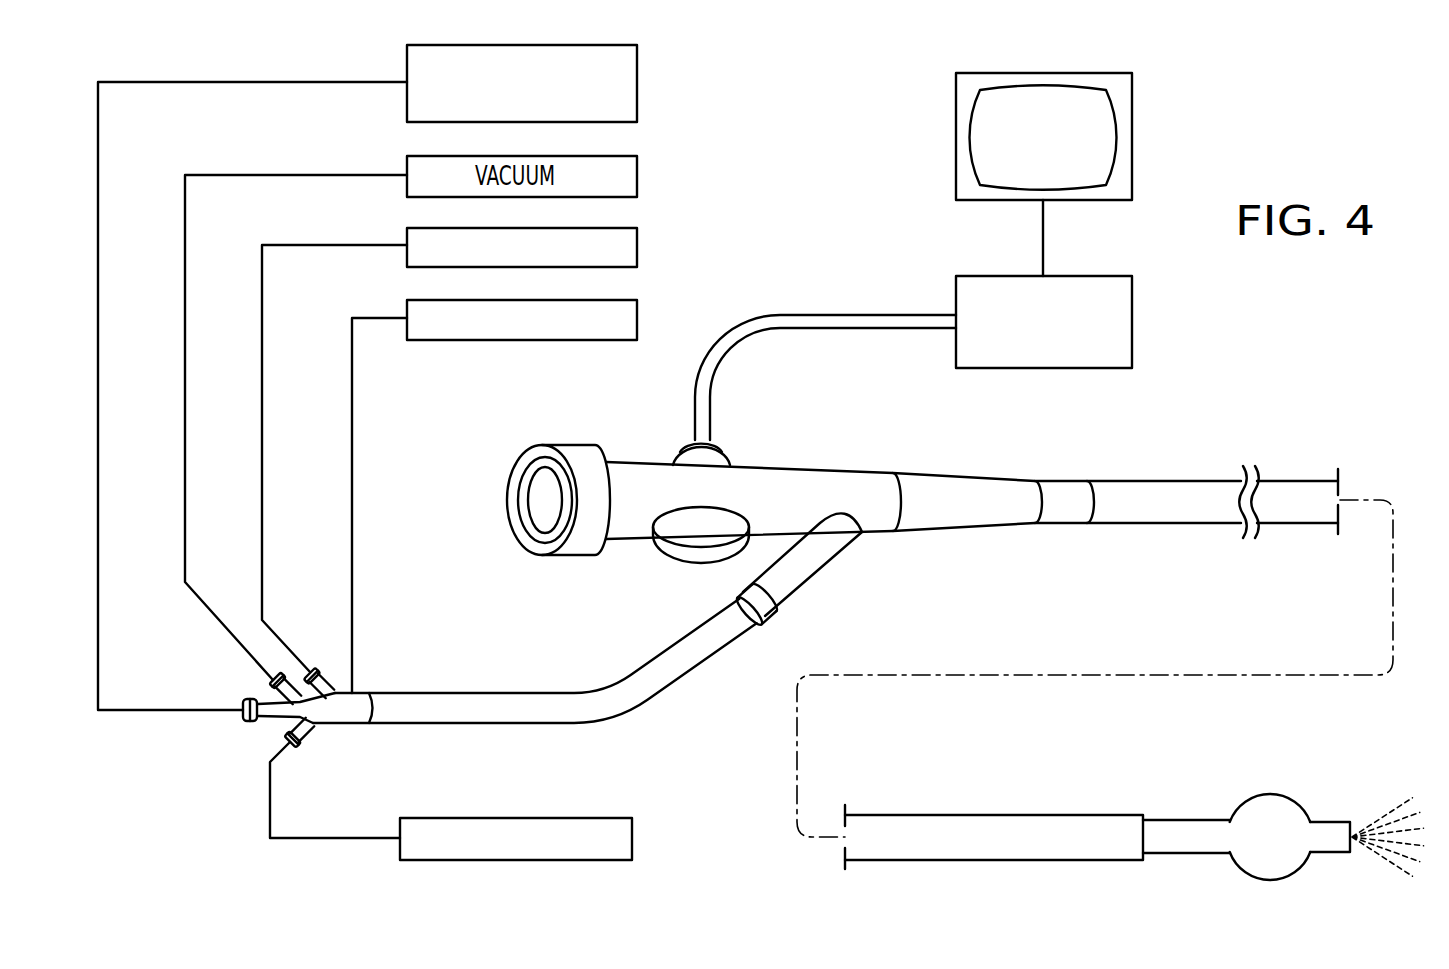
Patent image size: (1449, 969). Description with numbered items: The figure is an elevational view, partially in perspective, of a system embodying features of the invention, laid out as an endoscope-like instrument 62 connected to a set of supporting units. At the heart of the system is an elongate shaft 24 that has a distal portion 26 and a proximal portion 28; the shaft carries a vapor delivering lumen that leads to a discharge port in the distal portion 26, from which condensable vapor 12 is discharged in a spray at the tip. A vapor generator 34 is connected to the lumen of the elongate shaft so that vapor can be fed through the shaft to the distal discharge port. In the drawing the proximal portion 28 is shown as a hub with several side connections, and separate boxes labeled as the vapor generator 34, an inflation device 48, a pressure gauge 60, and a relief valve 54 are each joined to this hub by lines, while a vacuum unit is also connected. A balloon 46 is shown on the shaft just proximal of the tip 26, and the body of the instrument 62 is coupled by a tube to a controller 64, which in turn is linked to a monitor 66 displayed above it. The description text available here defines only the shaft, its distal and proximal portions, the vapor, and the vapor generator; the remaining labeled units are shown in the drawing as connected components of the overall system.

The condensable vapor 12 is at (1385, 815).
The elongate shaft 24 is at (1172, 818).
The distal portion 26 is at (1333, 855).
The proximal portion 28 is at (372, 724).
The vapor generator 34 is at (637, 110).
The balloon 46 is at (1280, 795).
The inflation device 48 is at (637, 258).
The relief valve 54 is at (632, 842).
The pressure gauge 60 is at (637, 330).
The endoscope 62 is at (852, 466).
The controller 64 is at (956, 293).
The monitor 66 is at (956, 168).